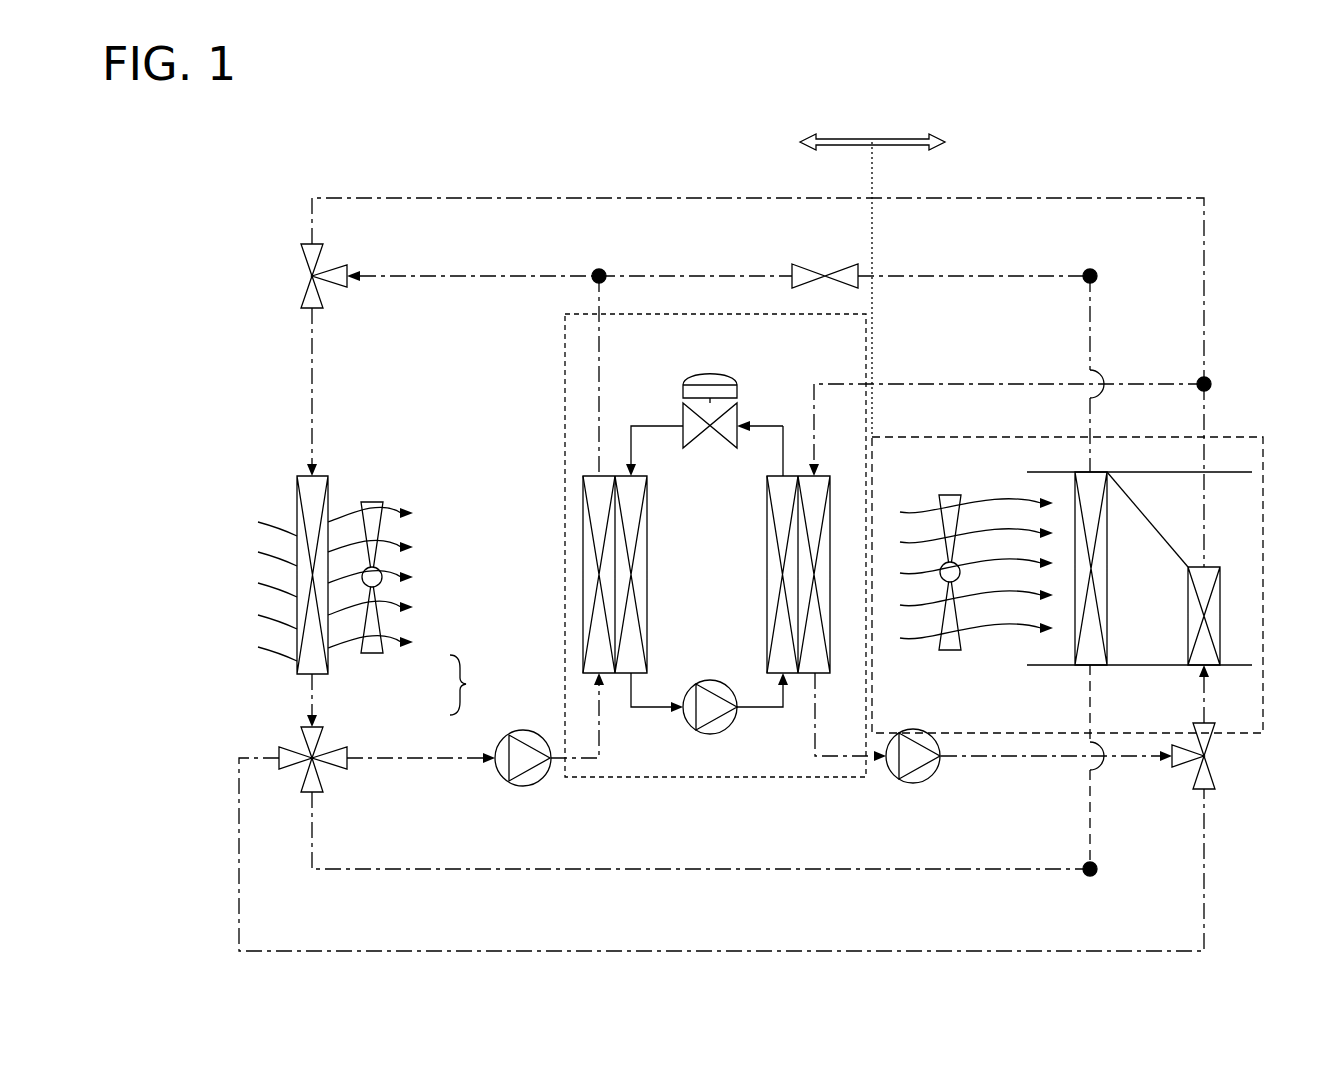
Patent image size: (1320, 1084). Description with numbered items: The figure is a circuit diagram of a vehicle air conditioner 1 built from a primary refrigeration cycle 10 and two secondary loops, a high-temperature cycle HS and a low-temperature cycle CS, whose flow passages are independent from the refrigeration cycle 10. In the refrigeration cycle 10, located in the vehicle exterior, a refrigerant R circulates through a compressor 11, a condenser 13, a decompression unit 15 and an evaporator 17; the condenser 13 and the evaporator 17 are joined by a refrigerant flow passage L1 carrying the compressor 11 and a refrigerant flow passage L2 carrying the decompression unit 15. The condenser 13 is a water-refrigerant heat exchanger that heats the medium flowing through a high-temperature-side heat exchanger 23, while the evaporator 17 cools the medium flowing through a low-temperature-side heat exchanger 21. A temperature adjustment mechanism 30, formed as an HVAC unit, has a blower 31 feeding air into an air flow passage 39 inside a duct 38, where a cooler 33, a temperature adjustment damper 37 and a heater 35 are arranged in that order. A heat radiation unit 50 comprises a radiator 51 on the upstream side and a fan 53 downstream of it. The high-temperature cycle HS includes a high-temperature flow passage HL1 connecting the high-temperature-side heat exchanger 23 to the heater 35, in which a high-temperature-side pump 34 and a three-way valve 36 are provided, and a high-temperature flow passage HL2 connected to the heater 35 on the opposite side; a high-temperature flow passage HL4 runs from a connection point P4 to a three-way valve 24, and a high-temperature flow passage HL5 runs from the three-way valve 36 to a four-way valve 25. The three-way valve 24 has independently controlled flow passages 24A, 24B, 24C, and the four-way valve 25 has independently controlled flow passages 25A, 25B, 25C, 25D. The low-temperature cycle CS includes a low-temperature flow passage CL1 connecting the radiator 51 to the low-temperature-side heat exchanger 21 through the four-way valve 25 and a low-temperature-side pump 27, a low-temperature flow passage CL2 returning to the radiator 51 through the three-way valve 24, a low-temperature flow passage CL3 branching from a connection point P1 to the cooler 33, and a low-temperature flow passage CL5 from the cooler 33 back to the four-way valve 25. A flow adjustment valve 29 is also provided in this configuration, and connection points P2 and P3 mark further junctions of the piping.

The vehicle air conditioner 1 is at (1080, 138).
The refrigeration cycle 10 is at (724, 298).
The compressor 11 is at (710, 735).
The condenser 13 is at (767, 588).
The decompression unit 15 is at (692, 373).
The evaporator 17 is at (647, 555).
The low-temperature-side heat exchanger 21 is at (583, 555).
The high-temperature-side heat exchanger 23 is at (829, 580).
The three-way valve 24 is at (303, 256).
The flow passage 24A is at (305, 290).
The flow passage 24B is at (333, 258).
The flow passage 24C is at (305, 262).
The four-way valve 25 is at (316, 806).
The flow passage 25A is at (320, 780).
The flow passage 25B is at (336, 750).
The flow passage 25C is at (305, 745).
The flow passage 25D is at (292, 752).
The low-temperature-side pump 27 is at (523, 786).
The flow adjustment valve 29 is at (825, 266).
The temperature adjustment mechanism 30 is at (995, 422).
The blower 31 is at (950, 490).
The cooler 33 is at (1083, 490).
The high-temperature-side pump 34 is at (913, 784).
The heater 35 is at (1222, 590).
The three-way valve 36 is at (1216, 780).
The temperature adjustment damper 37 is at (1150, 520).
The duct 38 is at (1227, 470).
The air flow passage 39 is at (1128, 641).
The heat radiation unit 50 is at (375, 517).
The radiator 51 is at (328, 662).
The fan 53 is at (383, 645).
The low-temperature flow passage CL1 is at (450, 760).
The low-temperature flow passage CL2 is at (425, 276).
The low-temperature flow passage CL3 is at (640, 276).
The low-temperature flow passage CL5 is at (716, 871).
The low-temperature cycle CS is at (533, 258).
The high-temperature flow passage HL1 is at (1030, 760).
The high-temperature flow passage HL2 is at (1175, 384).
The high-temperature flow passage HL4 is at (1160, 198).
The high-temperature flow passage HL5 is at (1204, 935).
The high-temperature cycle HS is at (960, 370).
The refrigerant flow passage L1 is at (762, 710).
The refrigerant flow passage L2 is at (814, 400).
The connection point P1 is at (599, 270).
The second branch point P2 is at (1090, 270).
The third branch point P3 is at (1097, 869).
The connection point P4 is at (1208, 382).
The refrigerant R is at (650, 428).